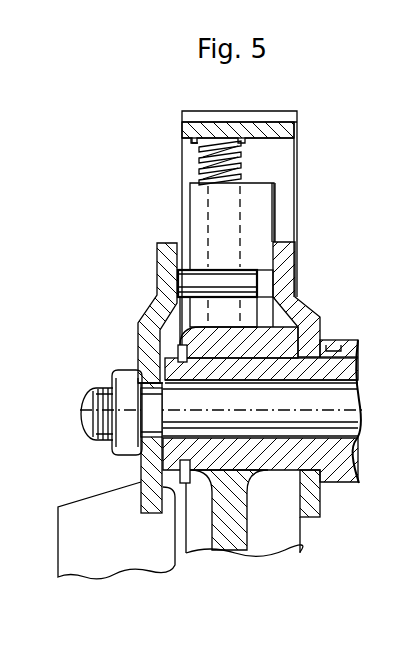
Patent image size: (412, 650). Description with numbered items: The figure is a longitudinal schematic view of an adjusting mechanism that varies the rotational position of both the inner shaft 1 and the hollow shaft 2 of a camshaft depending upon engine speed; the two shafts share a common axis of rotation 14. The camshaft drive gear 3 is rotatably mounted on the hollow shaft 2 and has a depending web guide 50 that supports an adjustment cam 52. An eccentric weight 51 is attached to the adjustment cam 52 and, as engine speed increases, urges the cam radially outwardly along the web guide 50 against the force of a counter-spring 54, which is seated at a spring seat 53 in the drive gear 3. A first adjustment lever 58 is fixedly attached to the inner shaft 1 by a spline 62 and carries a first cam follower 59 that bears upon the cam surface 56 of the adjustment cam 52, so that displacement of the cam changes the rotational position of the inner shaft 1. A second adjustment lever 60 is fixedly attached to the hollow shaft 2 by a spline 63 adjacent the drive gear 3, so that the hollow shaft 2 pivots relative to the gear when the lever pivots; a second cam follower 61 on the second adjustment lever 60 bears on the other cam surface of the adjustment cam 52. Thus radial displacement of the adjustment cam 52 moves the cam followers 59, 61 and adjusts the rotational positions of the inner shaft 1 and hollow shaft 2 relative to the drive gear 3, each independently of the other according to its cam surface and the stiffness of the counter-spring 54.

The inner shaft 1 is at (350, 397).
The hollow shaft 2 is at (338, 365).
The camshaft drive gear 3 is at (299, 112).
The axis of rotation 14 is at (340, 409).
The web guide 50 is at (233, 203).
The eccentric weight 51 is at (267, 215).
The adjustment cam 52 is at (265, 310).
The spring seat 53 is at (192, 143).
The counter-spring 54 is at (242, 158).
The cam surface 56 is at (218, 312).
The first adjustment lever 58 is at (147, 312).
The first cam follower 59 is at (190, 283).
The second adjustment lever 60 is at (319, 309).
The second cam follower 61 is at (271, 278).
The spline 62 is at (160, 392).
The spline 63 is at (325, 346).